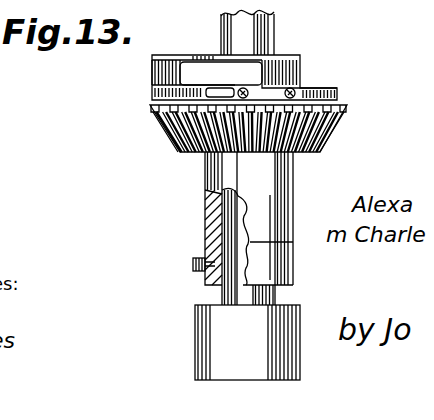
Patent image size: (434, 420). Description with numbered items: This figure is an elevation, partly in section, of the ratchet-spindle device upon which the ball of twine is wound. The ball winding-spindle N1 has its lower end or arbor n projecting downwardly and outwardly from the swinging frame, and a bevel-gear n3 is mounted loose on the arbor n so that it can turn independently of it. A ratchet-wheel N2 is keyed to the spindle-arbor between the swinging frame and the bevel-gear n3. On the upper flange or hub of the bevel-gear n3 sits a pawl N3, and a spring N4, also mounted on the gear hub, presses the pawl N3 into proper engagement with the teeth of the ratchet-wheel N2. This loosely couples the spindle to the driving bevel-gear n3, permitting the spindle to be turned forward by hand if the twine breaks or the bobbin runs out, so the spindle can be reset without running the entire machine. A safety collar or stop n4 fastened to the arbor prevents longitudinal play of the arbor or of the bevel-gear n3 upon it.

The ball winding-spindle N1 is at (263, 32).
The ratchet-wheel N2 is at (300, 67).
The pawl N3 is at (167, 68).
The spring N4 is at (221, 73).
The bevel-gear n3 is at (380, 140).
The arbor n is at (184, 222).
The safety collar or stop n4 is at (278, 267).